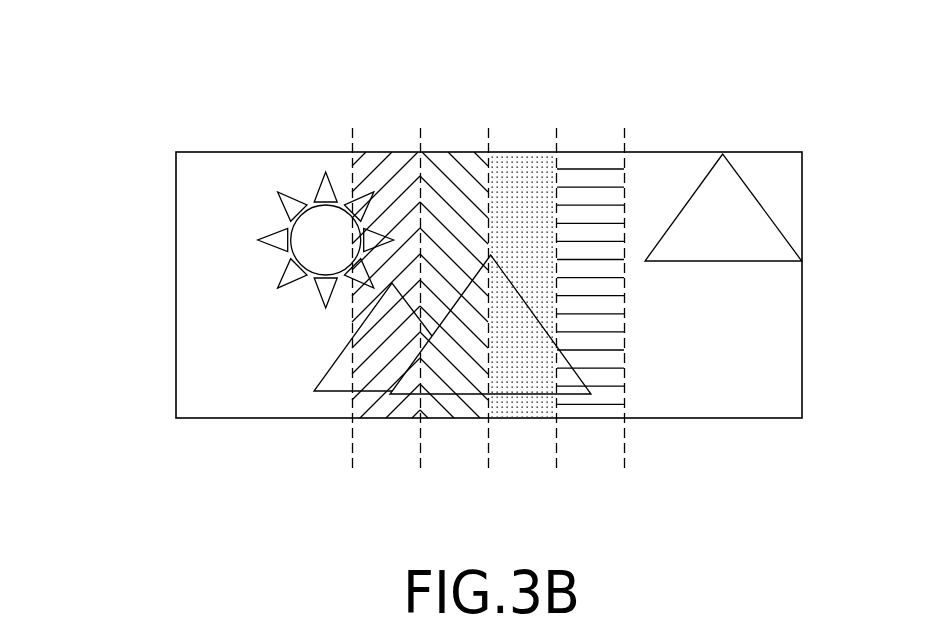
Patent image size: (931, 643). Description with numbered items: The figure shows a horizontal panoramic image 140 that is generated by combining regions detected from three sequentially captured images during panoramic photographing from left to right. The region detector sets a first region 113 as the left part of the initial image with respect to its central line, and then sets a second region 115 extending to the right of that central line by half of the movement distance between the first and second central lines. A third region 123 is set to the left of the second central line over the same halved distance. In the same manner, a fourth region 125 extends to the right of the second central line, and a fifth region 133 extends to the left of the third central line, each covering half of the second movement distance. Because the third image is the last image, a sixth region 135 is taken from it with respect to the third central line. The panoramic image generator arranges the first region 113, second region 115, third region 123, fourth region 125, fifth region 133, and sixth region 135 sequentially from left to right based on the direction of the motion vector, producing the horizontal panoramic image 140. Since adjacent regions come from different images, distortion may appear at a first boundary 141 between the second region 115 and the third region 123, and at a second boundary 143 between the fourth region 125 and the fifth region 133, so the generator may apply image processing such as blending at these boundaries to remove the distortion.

The first region 113 is at (268, 152).
The second region 115 is at (377, 152).
The third region 123 is at (466, 152).
The fourth region 125 is at (520, 152).
The fifth region 133 is at (594, 152).
The sixth region 135 is at (687, 152).
The horizontal panoramic image 140 is at (165, 302).
The first boundary 141 is at (423, 140).
The second boundary 143 is at (559, 140).